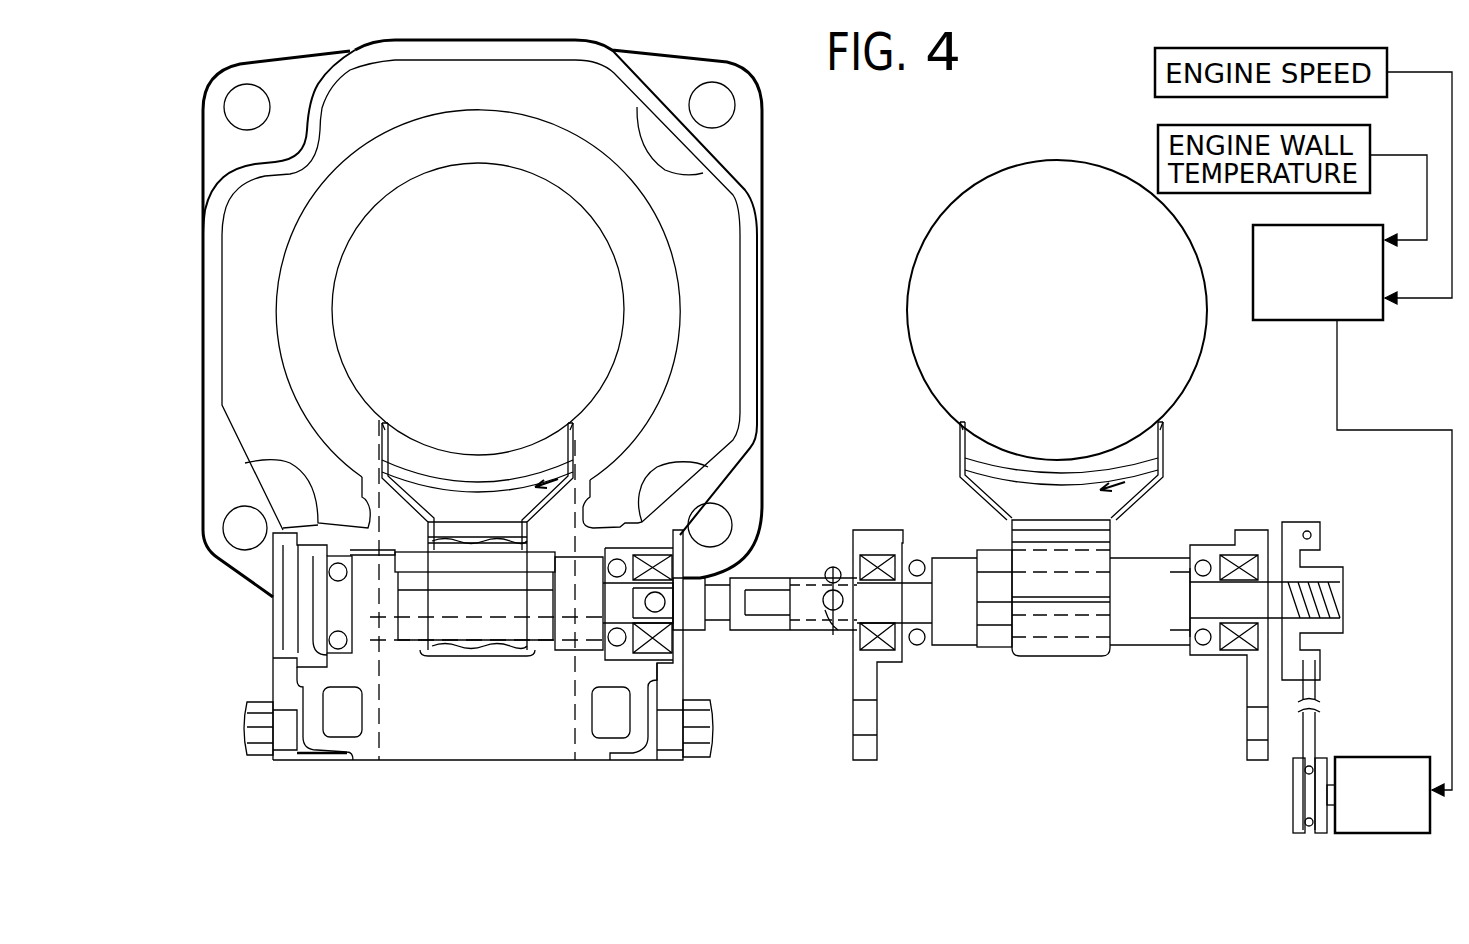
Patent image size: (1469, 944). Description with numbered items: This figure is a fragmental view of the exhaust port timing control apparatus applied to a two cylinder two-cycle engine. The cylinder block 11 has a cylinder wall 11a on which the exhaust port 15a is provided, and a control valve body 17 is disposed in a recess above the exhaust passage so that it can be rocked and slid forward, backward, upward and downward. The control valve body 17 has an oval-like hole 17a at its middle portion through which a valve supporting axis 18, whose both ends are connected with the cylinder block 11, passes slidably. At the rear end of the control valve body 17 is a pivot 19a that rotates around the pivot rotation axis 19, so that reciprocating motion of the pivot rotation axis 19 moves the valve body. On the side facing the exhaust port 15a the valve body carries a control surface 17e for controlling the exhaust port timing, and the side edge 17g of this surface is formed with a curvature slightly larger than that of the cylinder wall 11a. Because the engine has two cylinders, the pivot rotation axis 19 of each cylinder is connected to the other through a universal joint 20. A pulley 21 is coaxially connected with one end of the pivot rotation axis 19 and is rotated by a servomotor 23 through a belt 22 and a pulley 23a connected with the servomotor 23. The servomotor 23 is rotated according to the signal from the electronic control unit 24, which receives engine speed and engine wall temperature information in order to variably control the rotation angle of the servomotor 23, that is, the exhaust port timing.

The cylinder block 11 is at (203, 372).
The cylinder wall 11a is at (625, 284).
The exhaust port 15a is at (425, 417).
The control valve body 17 is at (577, 477).
The oval-like hole 17a is at (463, 540).
The control surface 17e is at (458, 453).
The side edge 17g is at (384, 425).
The valve supporting axis 18 is at (493, 552).
The pivot rotation axis 19 is at (337, 602).
The pivot 19a is at (470, 630).
The universal joint 20 is at (768, 632).
The pulley 21 is at (1295, 522).
The belt 22 is at (1316, 730).
The servomotor 23 is at (1375, 835).
The pulley 23a is at (1293, 812).
The electronic control unit (ECU) 24 is at (1290, 322).